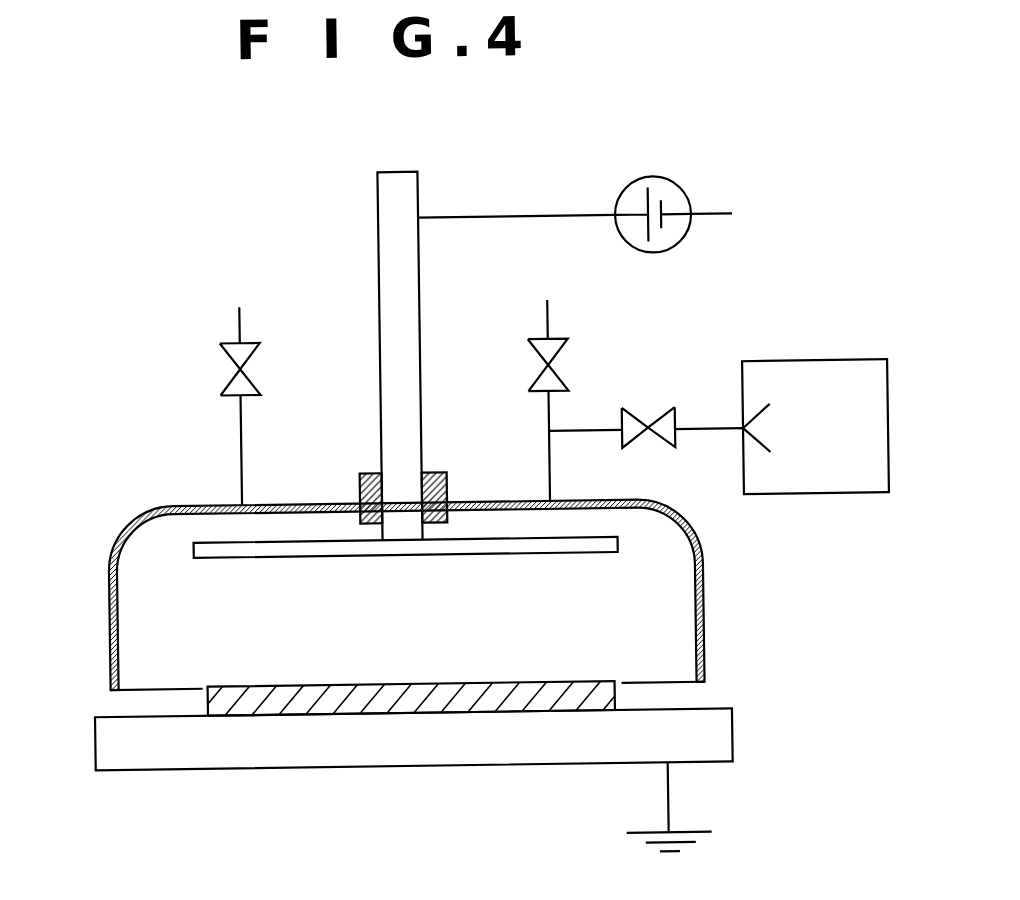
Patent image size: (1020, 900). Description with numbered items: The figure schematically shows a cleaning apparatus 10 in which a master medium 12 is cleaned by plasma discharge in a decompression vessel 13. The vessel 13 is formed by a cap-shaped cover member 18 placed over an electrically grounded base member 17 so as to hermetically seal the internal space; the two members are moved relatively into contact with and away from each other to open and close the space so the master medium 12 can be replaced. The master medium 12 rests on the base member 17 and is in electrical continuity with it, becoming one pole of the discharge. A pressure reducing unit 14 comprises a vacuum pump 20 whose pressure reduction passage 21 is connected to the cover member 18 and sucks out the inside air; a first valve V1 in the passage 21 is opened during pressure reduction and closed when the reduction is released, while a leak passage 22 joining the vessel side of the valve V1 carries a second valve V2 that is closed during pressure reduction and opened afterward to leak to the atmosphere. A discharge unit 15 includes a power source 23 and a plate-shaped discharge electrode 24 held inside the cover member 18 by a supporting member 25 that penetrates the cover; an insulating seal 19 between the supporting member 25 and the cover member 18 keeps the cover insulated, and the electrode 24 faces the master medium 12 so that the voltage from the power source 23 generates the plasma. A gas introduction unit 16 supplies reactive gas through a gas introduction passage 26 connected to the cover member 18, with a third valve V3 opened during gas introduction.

The cleaning apparatus 10 is at (235, 174).
The master medium 12 is at (457, 681).
The decompression vessel 13 is at (113, 535).
The pressure reducing unit 14 is at (822, 353).
The discharge unit 15 is at (699, 186).
The gas introduction unit 16 is at (215, 405).
The base member 17 is at (386, 758).
The cover member 18 is at (704, 607).
The insulating seal 19 is at (360, 479).
The vacuum pump 20 is at (813, 493).
The pressure reduction passage 21 is at (646, 430).
The leak passage 22 is at (537, 399).
The power source 23 is at (629, 191).
The discharge electrode 24 is at (326, 556).
The supporting member 25 is at (416, 415).
The gas introduction passage 26 is at (241, 445).
The first valve V1 is at (648, 411).
The second valve V2 is at (566, 364).
The third valve V3 is at (259, 368).